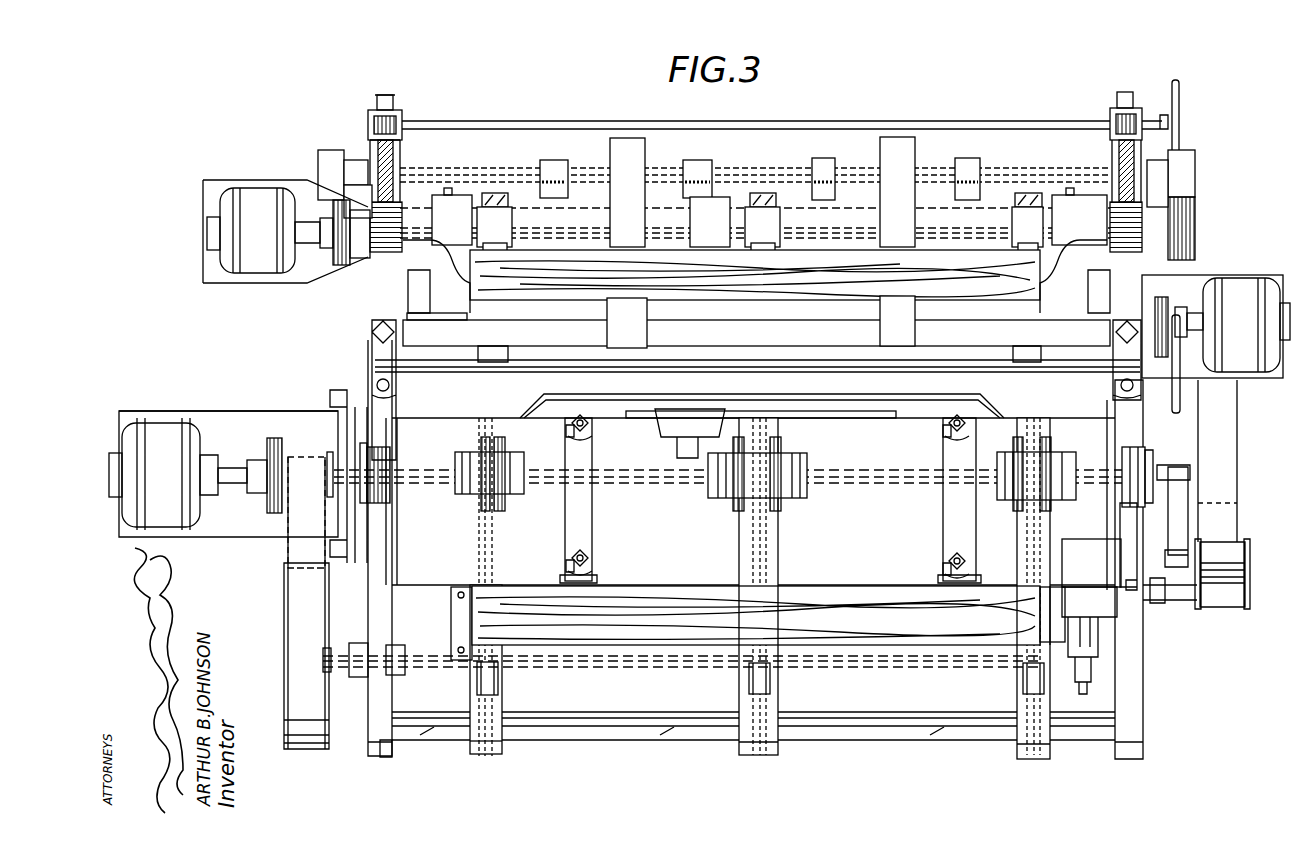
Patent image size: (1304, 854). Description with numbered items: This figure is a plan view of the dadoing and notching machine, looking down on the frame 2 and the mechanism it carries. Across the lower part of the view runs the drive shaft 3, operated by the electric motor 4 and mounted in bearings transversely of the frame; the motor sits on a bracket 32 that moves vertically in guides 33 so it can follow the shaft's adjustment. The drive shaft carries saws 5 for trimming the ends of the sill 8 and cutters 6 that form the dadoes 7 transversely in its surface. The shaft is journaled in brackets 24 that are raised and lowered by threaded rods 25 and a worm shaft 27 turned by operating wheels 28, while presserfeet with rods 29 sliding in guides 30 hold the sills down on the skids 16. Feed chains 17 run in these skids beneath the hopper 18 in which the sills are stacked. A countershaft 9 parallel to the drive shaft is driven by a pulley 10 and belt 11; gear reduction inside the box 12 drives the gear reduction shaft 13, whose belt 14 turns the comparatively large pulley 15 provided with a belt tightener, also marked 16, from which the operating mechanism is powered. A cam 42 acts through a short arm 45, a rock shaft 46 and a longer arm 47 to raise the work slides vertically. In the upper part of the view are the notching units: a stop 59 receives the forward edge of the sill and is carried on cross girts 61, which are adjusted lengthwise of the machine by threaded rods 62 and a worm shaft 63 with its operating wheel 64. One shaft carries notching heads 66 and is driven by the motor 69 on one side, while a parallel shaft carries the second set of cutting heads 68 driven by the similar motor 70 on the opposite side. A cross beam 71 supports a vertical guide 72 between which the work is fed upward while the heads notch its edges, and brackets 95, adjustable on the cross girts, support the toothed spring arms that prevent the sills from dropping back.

The frame 2 is at (368, 730).
The drive shaft 3 is at (222, 468).
The electric motor 4 is at (148, 423).
The saws 5 is at (475, 515).
The cutters 6 is at (505, 500).
The dadoes 7 is at (510, 283).
The sill 8 is at (683, 300).
The shaft 9 is at (427, 660).
The pulley 10 is at (323, 706).
The belt 11 is at (293, 550).
The box 12 is at (1100, 683).
The gear reduction shaft 13 is at (1183, 601).
The belt 14 is at (1233, 524).
The pulley 15 is at (1237, 478).
The skids 16 is at (490, 749).
The feed chains 17 is at (500, 688).
The hopper 18 is at (740, 655).
The brackets 24 is at (377, 422).
The threaded rods 25 is at (392, 392).
The worm shaft 27 is at (1057, 370).
The operating wheels 28 is at (1178, 409).
The rods 29 is at (592, 431).
The guides 30 is at (568, 431).
The bracket 32 is at (165, 411).
The guides 33 is at (343, 392).
The cam 42 is at (330, 150).
The short arm 45 is at (355, 177).
The shaft 46 is at (657, 170).
The longer arm 47 is at (557, 163).
The stop 59 is at (890, 167).
The cross girts 61 is at (523, 210).
The threaded rods 62 is at (385, 95).
The worm shaft 63 is at (958, 120).
The operating wheel 64 is at (1180, 92).
The notching or cutting heads 66 is at (492, 196).
The notching or cutting heads 68 is at (507, 350).
The motor 69 is at (253, 215).
The motor 70 is at (1243, 287).
The cross beam 71 is at (460, 332).
The vertical guide 72 is at (627, 322).
The brackets 95 is at (457, 195).